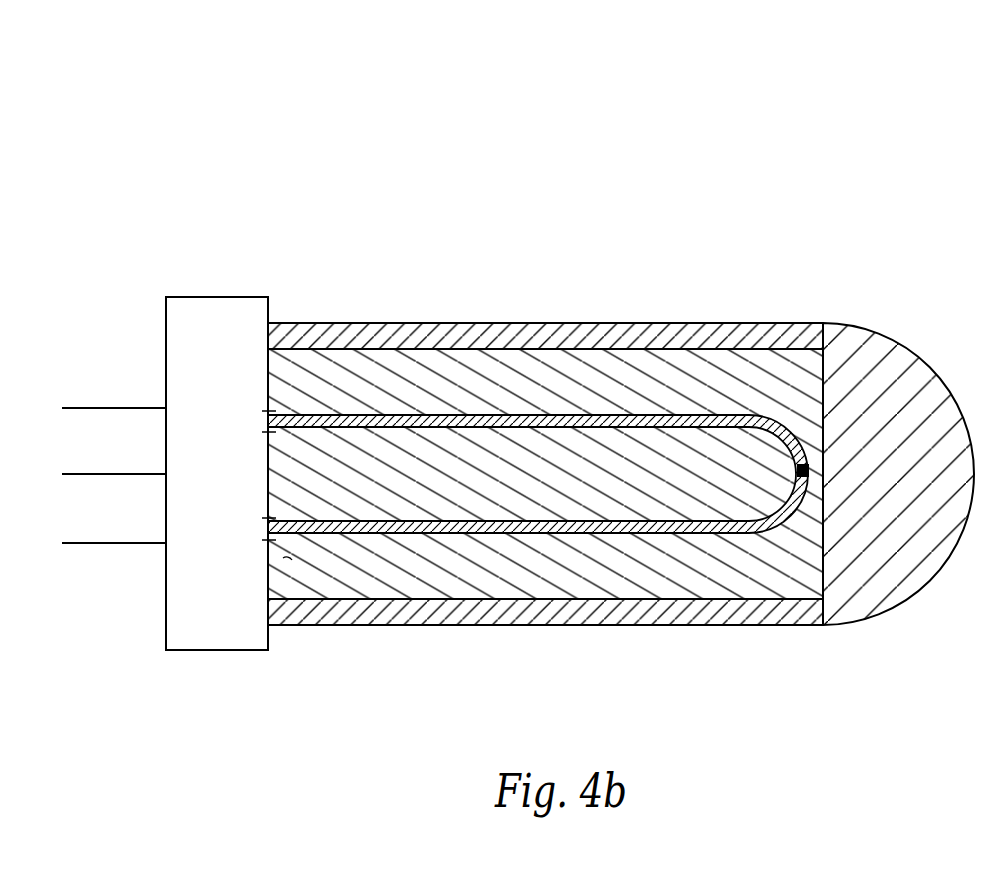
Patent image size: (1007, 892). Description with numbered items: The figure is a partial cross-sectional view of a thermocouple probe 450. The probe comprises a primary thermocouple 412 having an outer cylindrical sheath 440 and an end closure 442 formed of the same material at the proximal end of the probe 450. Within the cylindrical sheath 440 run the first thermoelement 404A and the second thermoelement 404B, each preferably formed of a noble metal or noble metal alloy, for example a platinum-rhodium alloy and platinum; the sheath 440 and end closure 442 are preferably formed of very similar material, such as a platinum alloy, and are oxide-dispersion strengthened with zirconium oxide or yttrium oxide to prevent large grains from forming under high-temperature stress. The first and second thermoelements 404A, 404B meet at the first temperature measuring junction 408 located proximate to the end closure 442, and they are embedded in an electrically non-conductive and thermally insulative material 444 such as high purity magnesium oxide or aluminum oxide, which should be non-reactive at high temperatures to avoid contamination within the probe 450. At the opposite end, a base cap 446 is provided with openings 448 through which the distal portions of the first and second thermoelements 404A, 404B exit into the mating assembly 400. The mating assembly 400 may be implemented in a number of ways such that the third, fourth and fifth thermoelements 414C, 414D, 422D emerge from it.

The mating assembly 400 is at (222, 297).
The first thermoelement 404A is at (548, 415).
The second thermoelement 404B is at (466, 521).
The first temperature measuring junction 408 is at (810, 467).
The primary thermocouple 412 is at (657, 171).
The third thermoelement 414C is at (80, 407).
The fourth thermoelement 414D is at (80, 473).
The fifth thermoelement 422D is at (85, 544).
The outer cylindrical sheath 440 is at (713, 323).
The end closure 442 is at (890, 377).
The insulative material 444 is at (378, 377).
The base cap 446 is at (283, 558).
The openings 448 is at (263, 528).
The thermocouple probe 450 is at (904, 64).